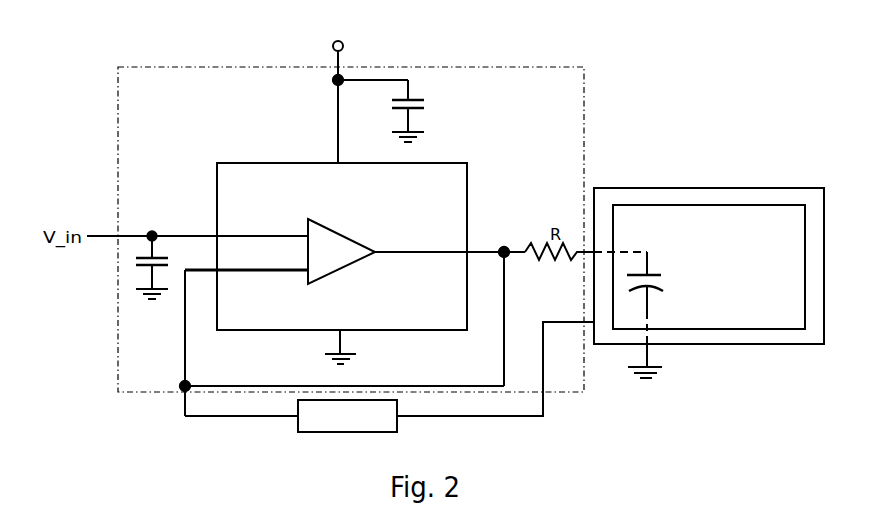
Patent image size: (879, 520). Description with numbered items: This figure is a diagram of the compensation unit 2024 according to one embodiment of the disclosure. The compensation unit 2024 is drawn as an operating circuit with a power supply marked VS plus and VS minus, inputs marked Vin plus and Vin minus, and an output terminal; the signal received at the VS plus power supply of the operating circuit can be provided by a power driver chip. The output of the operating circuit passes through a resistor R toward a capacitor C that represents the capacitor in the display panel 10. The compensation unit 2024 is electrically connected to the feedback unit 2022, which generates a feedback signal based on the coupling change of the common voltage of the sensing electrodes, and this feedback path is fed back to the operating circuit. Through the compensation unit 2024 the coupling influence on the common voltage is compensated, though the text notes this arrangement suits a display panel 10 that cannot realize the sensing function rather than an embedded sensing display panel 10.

The compensation unit 2024 is at (166, 95).
The feedback unit 2022 is at (389, 377).
The display panel 10 is at (780, 230).